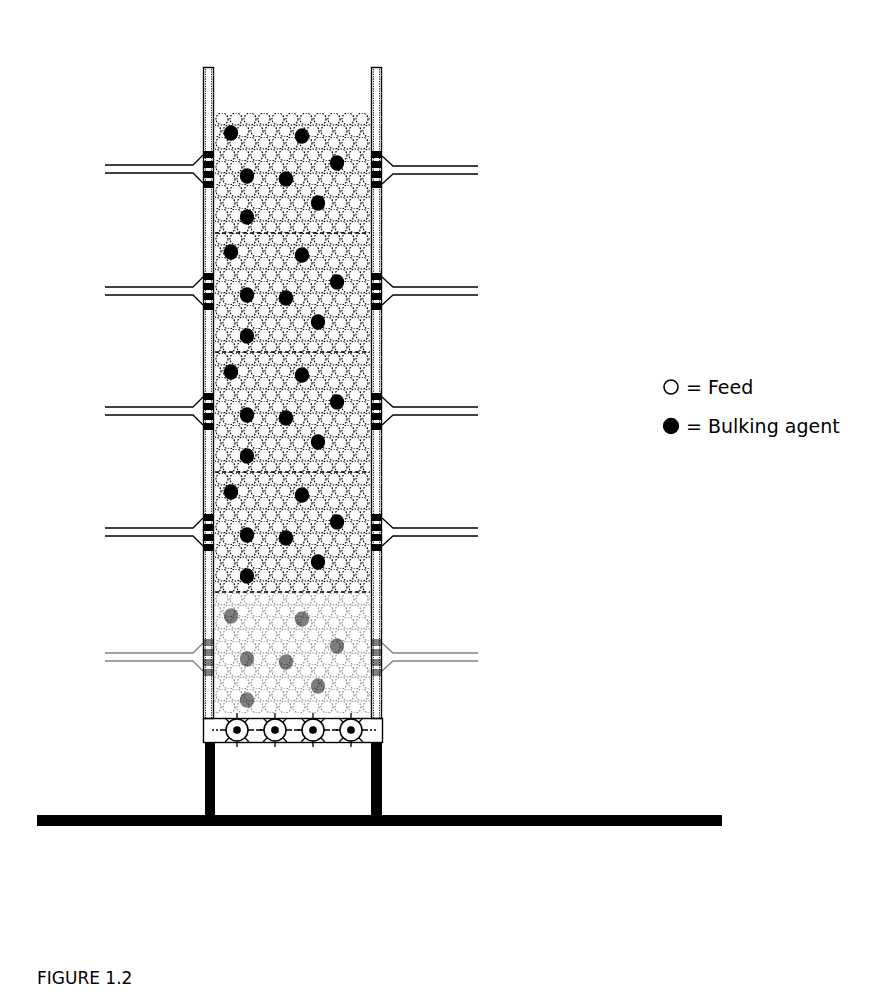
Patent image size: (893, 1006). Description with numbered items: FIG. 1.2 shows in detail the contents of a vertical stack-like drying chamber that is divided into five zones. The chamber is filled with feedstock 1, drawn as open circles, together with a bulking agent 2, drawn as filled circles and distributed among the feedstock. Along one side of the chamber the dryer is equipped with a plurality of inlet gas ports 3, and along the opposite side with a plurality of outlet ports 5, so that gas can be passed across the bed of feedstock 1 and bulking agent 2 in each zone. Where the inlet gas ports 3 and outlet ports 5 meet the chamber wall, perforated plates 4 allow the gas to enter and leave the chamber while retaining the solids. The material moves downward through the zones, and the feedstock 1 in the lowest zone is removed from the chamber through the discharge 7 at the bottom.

The feedstock 1 is at (348, 120).
The bulking agent 2 is at (302, 133).
The inlet gas ports 3 is at (104, 167).
The perforated plates 4 is at (201, 177).
The outlet ports 5 is at (479, 171).
The discharge 7 is at (352, 731).